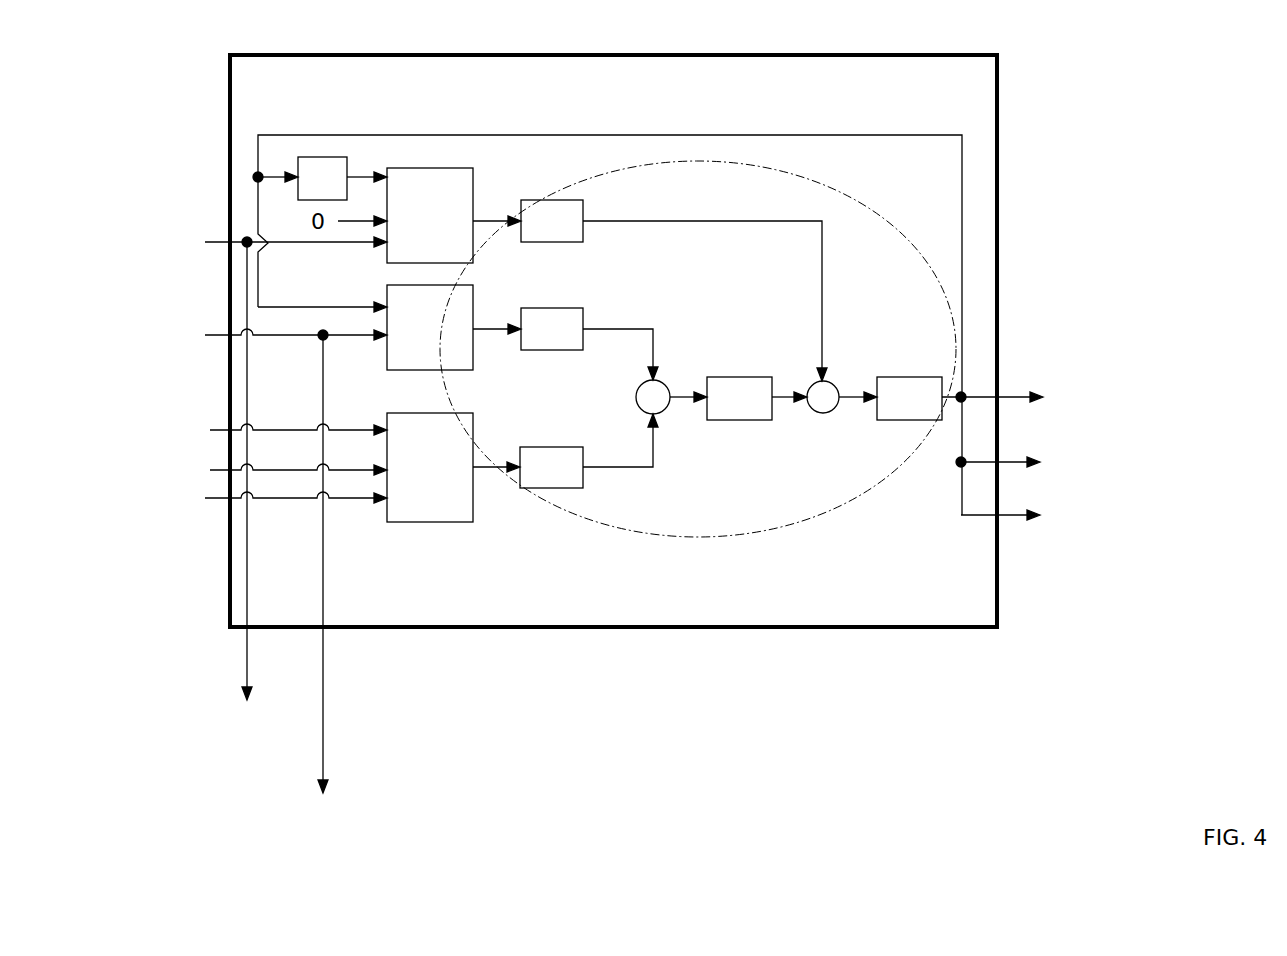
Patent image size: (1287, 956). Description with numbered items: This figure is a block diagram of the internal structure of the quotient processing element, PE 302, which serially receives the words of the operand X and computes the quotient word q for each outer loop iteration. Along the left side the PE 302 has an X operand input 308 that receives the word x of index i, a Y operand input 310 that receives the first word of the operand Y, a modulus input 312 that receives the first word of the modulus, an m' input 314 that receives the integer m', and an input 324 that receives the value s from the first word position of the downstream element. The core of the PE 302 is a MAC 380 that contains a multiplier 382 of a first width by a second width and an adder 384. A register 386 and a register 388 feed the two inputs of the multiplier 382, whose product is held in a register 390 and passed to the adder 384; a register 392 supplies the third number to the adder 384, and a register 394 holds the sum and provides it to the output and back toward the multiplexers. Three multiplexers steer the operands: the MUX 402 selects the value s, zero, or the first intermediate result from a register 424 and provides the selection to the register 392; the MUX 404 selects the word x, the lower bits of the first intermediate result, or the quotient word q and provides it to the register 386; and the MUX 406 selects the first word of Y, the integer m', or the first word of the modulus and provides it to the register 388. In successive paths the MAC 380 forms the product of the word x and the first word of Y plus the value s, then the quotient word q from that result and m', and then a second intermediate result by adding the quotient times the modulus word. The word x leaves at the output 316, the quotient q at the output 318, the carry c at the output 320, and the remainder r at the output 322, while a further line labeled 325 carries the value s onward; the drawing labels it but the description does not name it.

The processing element 302 is at (873, 609).
The X operand input 308 is at (230, 338).
The Y operand input 310 is at (228, 502).
The modulus input 312 is at (228, 472).
The m' input 314 is at (230, 431).
The output 316 is at (323, 630).
The output 318 is at (998, 398).
The output 320 is at (998, 463).
The output 322 is at (1000, 516).
The input 324 is at (230, 243).
The s[0] output 325 is at (245, 632).
The MAC 380 is at (858, 192).
The multiplier 382 is at (668, 383).
The adder 384 is at (826, 413).
The register 386 is at (553, 349).
The register 388 is at (548, 489).
The register 390 is at (750, 422).
The register 392 is at (583, 236).
The register 394 is at (895, 377).
The MUX 402 is at (411, 250).
The MUX 404 is at (411, 365).
The MUX 406 is at (411, 502).
The register 424 is at (313, 157).